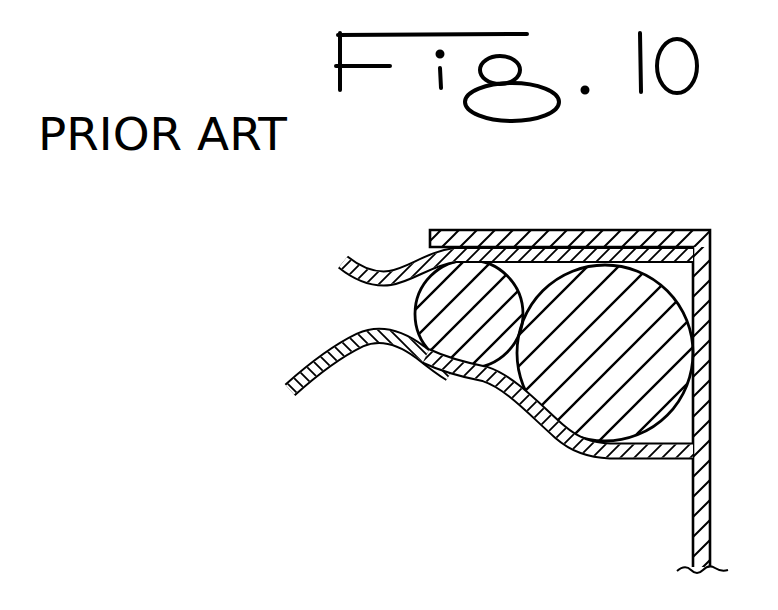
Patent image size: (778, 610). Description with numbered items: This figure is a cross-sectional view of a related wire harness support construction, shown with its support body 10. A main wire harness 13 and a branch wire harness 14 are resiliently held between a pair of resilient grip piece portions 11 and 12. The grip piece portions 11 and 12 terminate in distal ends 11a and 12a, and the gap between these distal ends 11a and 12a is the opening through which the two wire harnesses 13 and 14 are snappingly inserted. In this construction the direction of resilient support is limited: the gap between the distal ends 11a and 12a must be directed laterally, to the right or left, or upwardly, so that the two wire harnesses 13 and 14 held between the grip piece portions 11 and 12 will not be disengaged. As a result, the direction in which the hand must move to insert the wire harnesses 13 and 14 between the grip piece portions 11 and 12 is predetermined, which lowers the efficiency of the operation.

The frame body 10 is at (618, 230).
The grip piece portion 11 is at (343, 399).
The distal end 11a is at (290, 395).
The grip piece portion 12 is at (480, 226).
The distal end 12a is at (383, 215).
The main wire harness 13 is at (534, 434).
The branch wire harness 14 is at (432, 378).